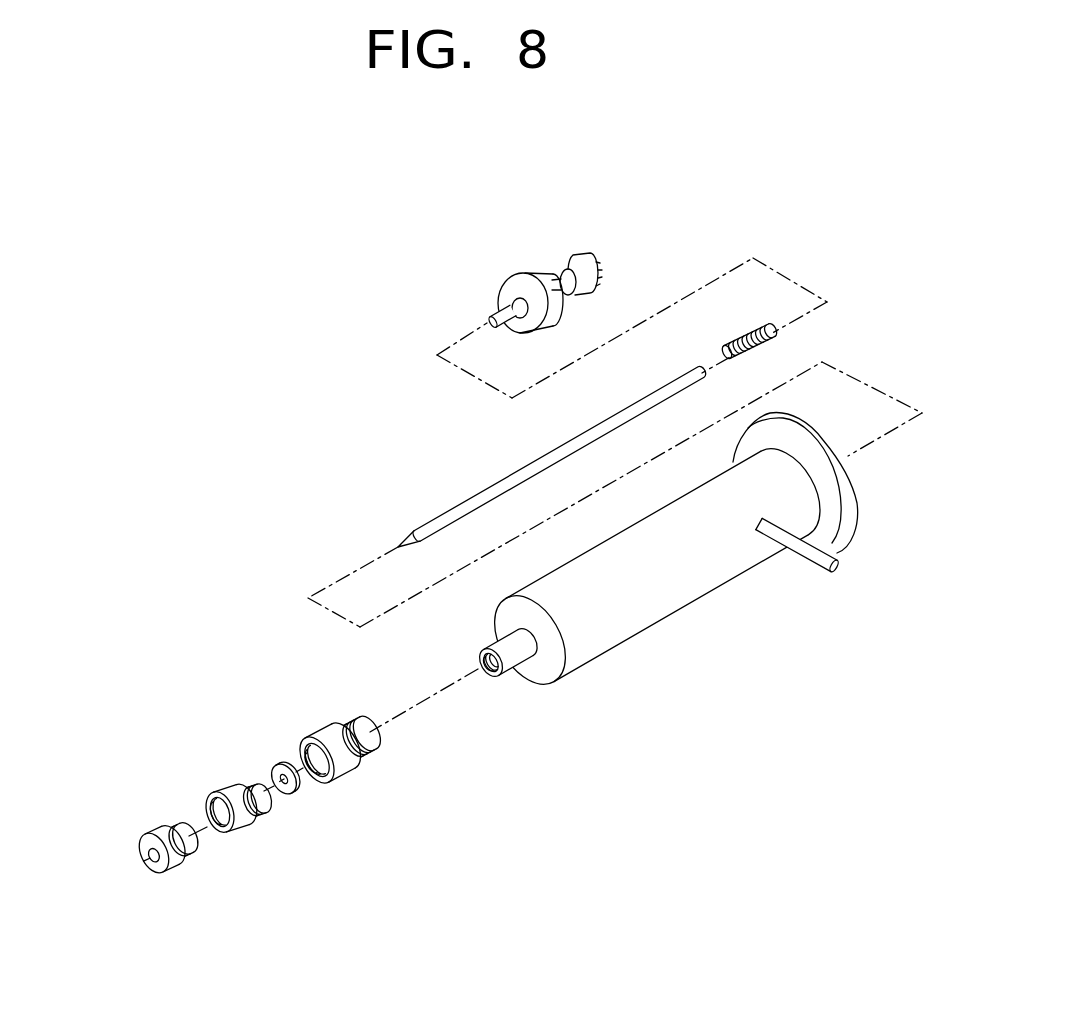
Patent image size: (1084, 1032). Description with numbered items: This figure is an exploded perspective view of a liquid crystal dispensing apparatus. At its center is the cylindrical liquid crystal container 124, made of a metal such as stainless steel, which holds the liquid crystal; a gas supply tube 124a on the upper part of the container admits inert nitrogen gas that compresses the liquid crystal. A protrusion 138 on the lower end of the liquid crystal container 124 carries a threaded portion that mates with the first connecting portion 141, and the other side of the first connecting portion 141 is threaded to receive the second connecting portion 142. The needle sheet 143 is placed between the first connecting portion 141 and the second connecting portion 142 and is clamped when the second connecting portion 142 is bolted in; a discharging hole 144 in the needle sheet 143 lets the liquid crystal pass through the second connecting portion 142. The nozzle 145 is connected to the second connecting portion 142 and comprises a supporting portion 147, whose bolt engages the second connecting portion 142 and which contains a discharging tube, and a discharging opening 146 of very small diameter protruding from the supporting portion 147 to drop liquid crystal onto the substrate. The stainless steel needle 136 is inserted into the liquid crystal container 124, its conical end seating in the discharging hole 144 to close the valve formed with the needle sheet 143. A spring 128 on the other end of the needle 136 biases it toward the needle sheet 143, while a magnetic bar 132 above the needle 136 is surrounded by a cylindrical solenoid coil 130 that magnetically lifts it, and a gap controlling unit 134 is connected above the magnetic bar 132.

The liquid crystal container 124 is at (735, 552).
The gas supply tube 124a is at (825, 573).
The spring 128 is at (737, 342).
The solenoid coil 130 is at (522, 282).
The magnetic bar 132 is at (512, 312).
The gap controlling unit 134 is at (571, 262).
The needle 136 is at (438, 513).
The protrusion 138 is at (513, 657).
The first connecting portion 141 is at (337, 762).
The second connecting portion 142 is at (243, 832).
The needle sheet 143 is at (302, 803).
The discharging hole 144 is at (282, 775).
The nozzle 145 is at (147, 833).
The discharging opening 146 is at (143, 860).
The supporting portion 147 is at (172, 865).